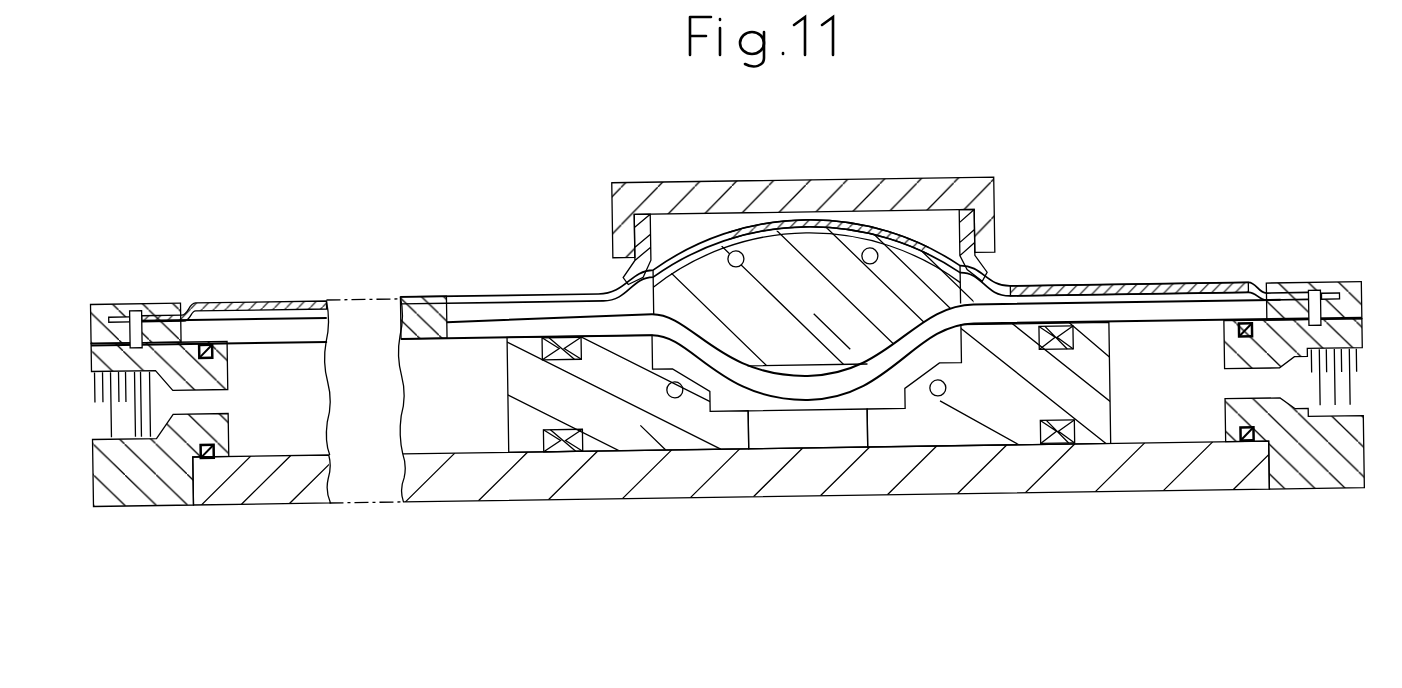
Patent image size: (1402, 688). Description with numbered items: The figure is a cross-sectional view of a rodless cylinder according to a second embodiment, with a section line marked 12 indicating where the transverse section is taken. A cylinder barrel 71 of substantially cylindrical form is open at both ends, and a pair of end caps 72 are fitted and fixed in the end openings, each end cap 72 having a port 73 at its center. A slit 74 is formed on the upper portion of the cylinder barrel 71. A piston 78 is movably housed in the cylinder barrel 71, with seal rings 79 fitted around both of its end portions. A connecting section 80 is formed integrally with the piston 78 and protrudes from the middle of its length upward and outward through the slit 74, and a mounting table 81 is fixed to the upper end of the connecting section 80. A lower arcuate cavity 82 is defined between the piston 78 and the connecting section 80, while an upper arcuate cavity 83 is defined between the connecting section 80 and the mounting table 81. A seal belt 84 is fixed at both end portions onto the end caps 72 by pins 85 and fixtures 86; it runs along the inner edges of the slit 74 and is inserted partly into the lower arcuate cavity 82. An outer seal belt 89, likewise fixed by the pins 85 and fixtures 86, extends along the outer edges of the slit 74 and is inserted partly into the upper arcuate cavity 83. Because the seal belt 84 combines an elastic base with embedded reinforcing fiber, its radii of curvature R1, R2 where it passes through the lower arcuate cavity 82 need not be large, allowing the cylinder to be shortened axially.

The cylinder barrel 71 is at (455, 483).
The end caps 72 is at (142, 490).
The port 73 is at (110, 428).
The slit 74 is at (430, 319).
The piston 78 is at (690, 438).
The seal rings 79 is at (570, 452).
The connecting section 80 is at (625, 269).
The mounting table 81 is at (757, 184).
The lower arcuate cavity 82 is at (752, 402).
The upper arcuate cavity 83 is at (898, 221).
The seal belt 84 is at (1087, 312).
The pins 85 is at (136, 292).
The fixtures 86 is at (180, 294).
The outer seal belt 89 is at (1153, 292).
The radius of curvature R1 is at (809, 375).
The radius of curvature R2 is at (668, 366).
The section line 12- 12 is at (275, 242).